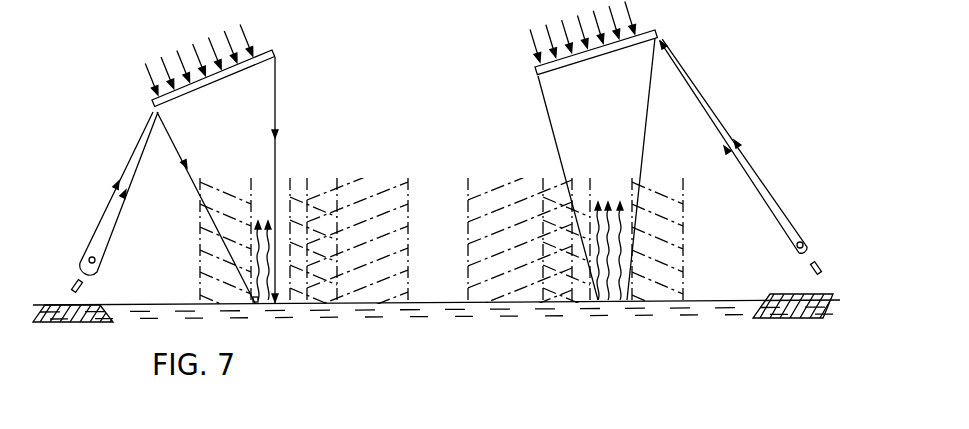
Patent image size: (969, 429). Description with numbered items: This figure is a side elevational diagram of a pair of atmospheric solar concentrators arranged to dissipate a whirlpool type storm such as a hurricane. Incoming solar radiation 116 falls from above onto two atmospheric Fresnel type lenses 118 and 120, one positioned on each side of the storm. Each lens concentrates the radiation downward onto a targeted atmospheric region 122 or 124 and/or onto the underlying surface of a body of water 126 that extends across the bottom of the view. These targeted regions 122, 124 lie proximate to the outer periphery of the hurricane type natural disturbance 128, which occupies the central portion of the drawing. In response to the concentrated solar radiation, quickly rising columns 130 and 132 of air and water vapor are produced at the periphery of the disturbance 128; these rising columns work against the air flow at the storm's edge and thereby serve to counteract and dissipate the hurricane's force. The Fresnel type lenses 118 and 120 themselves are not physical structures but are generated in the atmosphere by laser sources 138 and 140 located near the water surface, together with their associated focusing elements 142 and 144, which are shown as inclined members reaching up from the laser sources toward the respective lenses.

The incoming solar radiation 116 is at (243, 27).
The atmospheric Fresnel type lens 118 is at (264, 66).
The atmospheric Fresnel type lens 120 is at (535, 70).
The atmospheric region 122 is at (267, 303).
The atmospheric region 124 is at (609, 298).
The body of water 126 is at (720, 300).
The hurricane type natural disturbance 128 is at (490, 190).
The rising column of air and water vapor 130 is at (256, 254).
The rising column of air and water vapor 132 is at (620, 240).
The laser source 138 is at (83, 282).
The laser source 140 is at (821, 266).
The focusing element 142 is at (97, 273).
The focusing element 144 is at (842, 224).